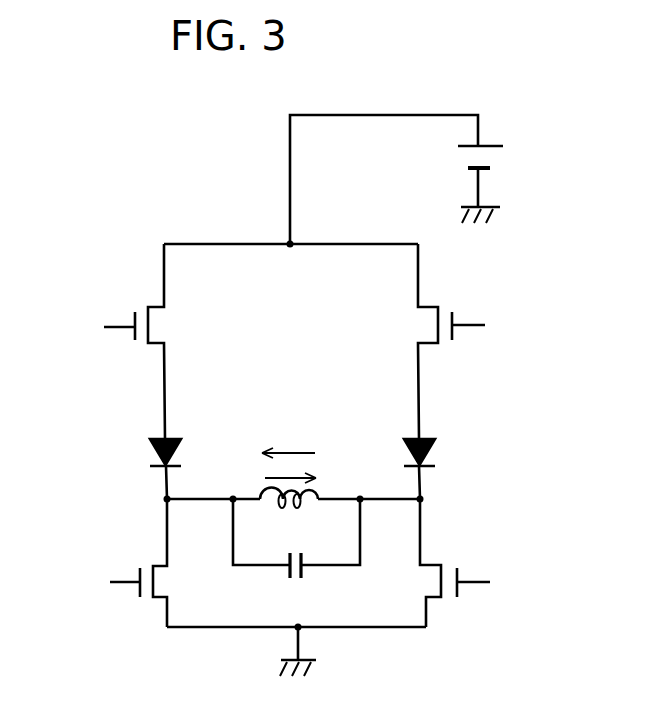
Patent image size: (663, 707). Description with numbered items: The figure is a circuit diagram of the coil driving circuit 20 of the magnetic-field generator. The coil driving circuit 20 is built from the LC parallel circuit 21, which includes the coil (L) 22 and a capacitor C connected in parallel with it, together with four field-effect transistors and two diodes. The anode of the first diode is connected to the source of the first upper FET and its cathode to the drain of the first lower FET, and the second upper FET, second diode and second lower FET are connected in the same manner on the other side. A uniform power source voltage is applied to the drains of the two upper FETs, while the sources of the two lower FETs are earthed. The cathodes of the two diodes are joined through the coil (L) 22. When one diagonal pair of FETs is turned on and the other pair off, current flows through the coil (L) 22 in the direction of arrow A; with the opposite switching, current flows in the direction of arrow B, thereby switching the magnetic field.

The coil driving circuit 20 is at (133, 183).
The LC parallel circuit 21 is at (295, 425).
The coil (L) 22 is at (273, 508).